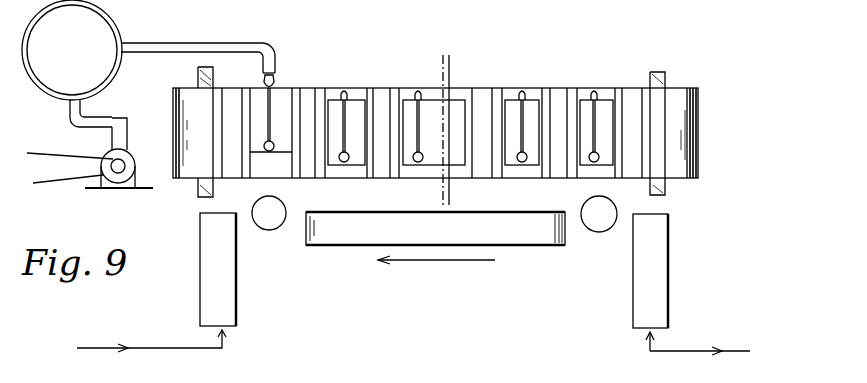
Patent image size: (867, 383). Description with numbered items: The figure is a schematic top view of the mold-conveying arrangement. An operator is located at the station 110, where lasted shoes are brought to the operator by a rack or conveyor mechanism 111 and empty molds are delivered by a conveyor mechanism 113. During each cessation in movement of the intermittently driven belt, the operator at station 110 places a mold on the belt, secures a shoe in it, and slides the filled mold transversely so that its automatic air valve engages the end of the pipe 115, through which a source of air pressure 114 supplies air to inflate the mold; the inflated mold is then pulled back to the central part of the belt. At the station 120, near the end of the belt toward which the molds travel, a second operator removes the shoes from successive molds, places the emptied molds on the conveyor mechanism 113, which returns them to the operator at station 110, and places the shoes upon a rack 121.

The operator station 110 is at (273, 230).
The rack or conveyor mechanism 111 is at (211, 287).
The conveyor mechanism 113 is at (435, 238).
The source of air pressure 114 is at (120, 30).
The pipe 115 is at (277, 60).
The operator station 120 is at (600, 232).
The rack 121 is at (657, 256).